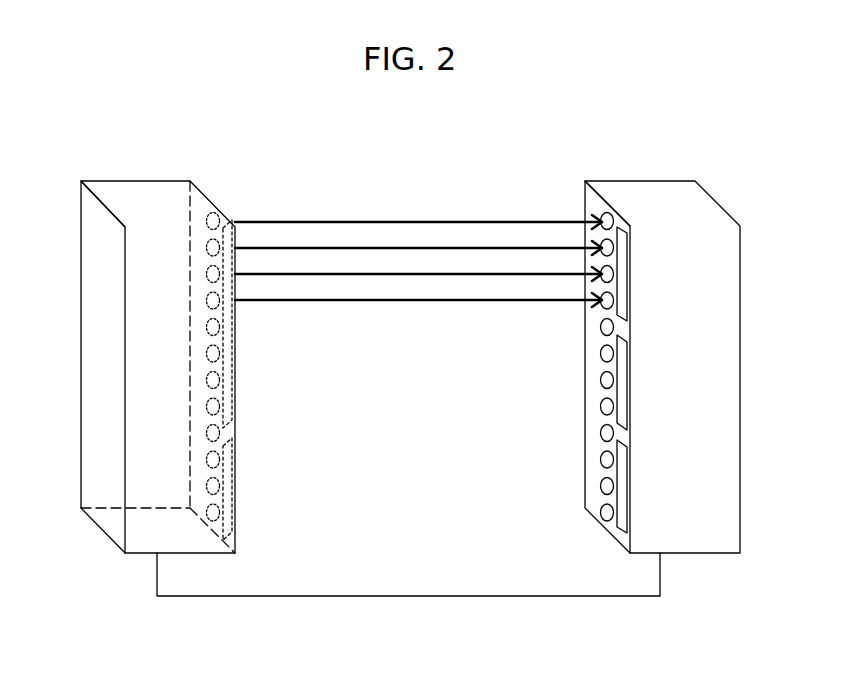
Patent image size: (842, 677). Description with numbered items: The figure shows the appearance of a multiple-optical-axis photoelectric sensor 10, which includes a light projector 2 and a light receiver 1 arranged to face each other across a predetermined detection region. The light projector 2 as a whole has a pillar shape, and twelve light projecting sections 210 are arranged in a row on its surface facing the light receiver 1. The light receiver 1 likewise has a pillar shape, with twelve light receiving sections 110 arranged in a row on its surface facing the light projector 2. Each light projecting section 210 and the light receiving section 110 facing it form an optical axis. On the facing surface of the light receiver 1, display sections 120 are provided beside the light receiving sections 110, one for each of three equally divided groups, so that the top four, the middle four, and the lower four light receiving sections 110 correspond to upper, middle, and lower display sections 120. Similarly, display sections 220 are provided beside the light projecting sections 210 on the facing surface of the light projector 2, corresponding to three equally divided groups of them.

The multiple-optical-axis photoelectric sensor 10 is at (412, 132).
The light receiver 1 is at (642, 179).
The light projector 2 is at (142, 181).
The light receiving sections 110 is at (600, 216).
The display section 120 is at (622, 368).
The light projecting sections 210 is at (214, 211).
The display section 220 is at (233, 381).